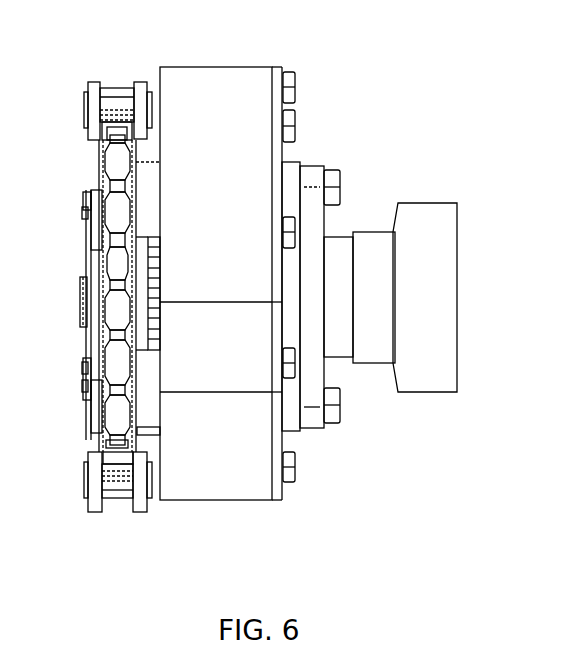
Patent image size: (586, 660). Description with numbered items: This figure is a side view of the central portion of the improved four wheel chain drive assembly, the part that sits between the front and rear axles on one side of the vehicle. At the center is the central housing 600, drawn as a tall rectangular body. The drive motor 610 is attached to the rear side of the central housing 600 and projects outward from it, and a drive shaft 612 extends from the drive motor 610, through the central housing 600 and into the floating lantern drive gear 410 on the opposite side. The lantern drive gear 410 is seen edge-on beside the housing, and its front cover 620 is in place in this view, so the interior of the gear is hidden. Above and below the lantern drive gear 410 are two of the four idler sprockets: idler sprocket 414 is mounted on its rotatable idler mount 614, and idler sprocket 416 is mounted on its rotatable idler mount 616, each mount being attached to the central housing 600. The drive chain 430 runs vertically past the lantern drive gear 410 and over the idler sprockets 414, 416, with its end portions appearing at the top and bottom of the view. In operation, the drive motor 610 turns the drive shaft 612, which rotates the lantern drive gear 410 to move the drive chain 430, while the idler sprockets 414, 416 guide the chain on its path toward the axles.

The central housing 600 is at (213, 84).
The drive motor 610 is at (445, 290).
The drive shaft 612 is at (148, 288).
The idler mount 614 is at (150, 172).
The idler mount 616 is at (148, 430).
The front cover 620 is at (95, 272).
The floating lantern drive gear 410 is at (85, 302).
The idler sprocket 414 is at (100, 147).
The idler sprocket 416 is at (104, 441).
The drive chain 430 is at (115, 98).